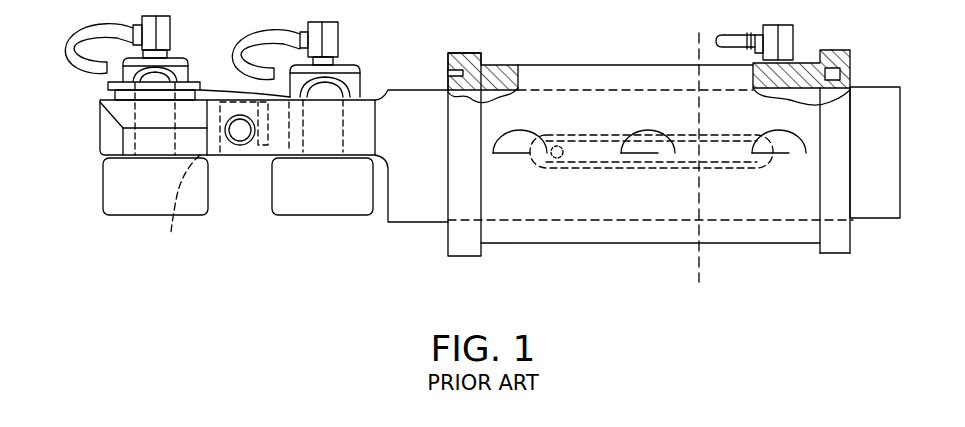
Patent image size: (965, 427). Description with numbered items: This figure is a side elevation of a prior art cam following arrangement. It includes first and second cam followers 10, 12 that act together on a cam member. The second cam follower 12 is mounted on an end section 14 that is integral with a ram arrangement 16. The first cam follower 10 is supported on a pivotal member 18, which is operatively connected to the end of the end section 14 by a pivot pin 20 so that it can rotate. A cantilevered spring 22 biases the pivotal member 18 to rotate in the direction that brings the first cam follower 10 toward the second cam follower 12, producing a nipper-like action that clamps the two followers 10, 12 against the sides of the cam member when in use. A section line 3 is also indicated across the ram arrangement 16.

The first solenoid valve 10 is at (143, 207).
The second solenoid valve 12 is at (320, 207).
The fluid passage 14 is at (179, 207).
The manifold housing 16 is at (417, 88).
The valve body 18 is at (100, 127).
The port 20 is at (240, 138).
The mounting bracket 22 is at (213, 85).
The section line 3- 3 is at (699, 33).